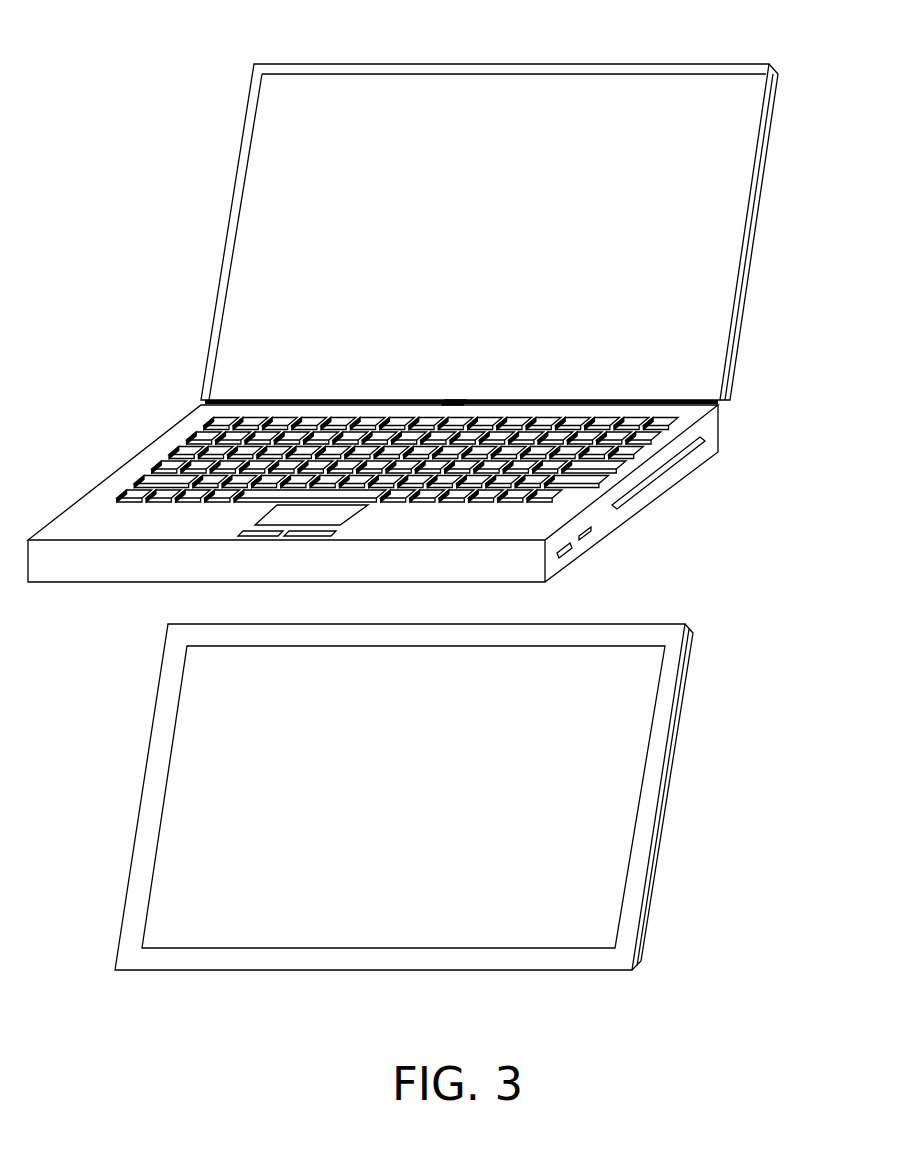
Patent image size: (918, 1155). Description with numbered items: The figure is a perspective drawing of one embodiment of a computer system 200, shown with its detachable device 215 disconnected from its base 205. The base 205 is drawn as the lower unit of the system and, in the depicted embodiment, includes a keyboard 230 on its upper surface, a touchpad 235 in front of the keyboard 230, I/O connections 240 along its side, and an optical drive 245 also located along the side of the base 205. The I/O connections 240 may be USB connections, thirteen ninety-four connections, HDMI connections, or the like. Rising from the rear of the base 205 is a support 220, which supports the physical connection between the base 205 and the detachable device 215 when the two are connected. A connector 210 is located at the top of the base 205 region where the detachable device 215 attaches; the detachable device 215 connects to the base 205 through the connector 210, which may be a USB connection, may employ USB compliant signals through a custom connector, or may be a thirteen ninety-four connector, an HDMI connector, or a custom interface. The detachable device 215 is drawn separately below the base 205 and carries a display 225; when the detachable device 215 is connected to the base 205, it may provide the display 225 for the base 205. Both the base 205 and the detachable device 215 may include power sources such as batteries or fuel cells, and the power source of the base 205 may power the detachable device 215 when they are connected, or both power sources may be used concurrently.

The computer system 200 is at (102, 60).
The base 205 is at (126, 476).
The connector 210 is at (452, 398).
The detachable device 215 is at (160, 737).
The support 220 is at (273, 214).
The display 225 is at (182, 821).
The keyboard 230 is at (206, 443).
The touchpad 235 is at (265, 539).
The I/O connections 240 is at (590, 534).
The optical drive 245 is at (710, 432).